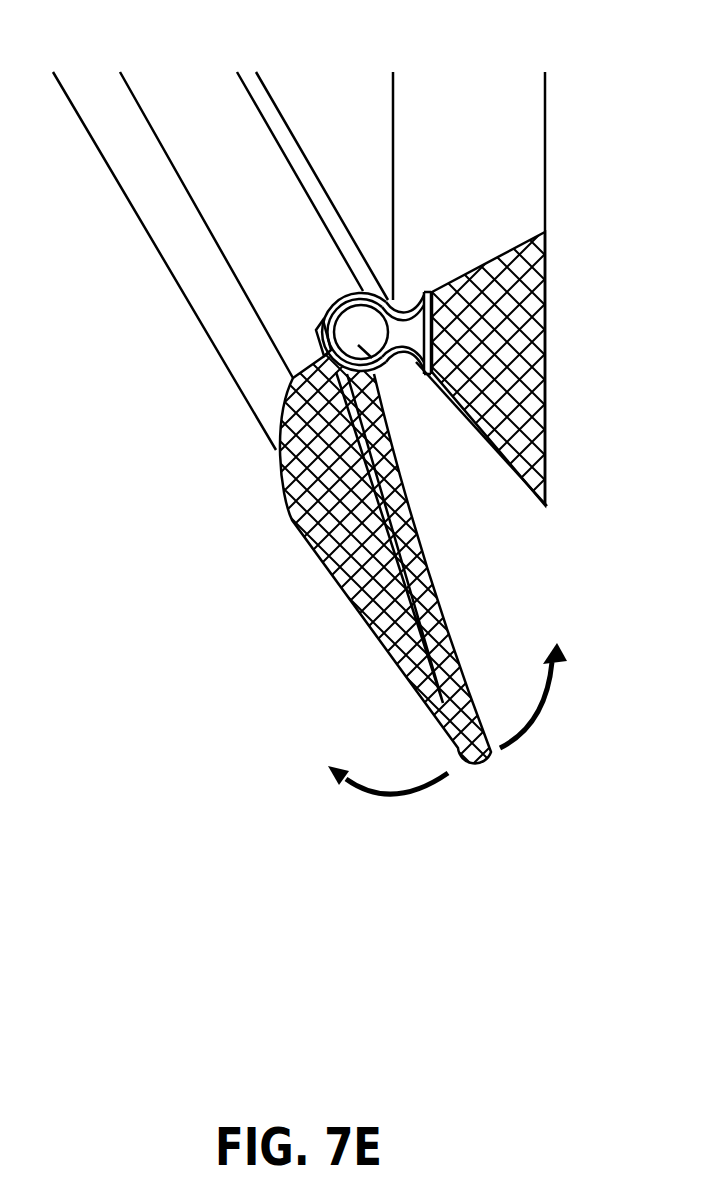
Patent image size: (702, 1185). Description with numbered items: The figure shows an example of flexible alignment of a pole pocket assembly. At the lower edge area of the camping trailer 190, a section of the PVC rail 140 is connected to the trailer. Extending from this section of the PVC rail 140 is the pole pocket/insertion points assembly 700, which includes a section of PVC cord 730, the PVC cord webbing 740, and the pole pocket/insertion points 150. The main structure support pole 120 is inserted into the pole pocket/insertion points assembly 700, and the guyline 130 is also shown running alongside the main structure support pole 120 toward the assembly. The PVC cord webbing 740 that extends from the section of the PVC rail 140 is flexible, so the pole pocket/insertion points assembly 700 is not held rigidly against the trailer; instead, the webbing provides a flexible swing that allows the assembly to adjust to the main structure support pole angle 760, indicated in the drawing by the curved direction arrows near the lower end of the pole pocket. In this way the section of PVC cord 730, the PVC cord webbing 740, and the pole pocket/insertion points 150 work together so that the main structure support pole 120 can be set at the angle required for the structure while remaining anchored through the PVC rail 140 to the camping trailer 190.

The main structure support pole 120 is at (128, 142).
The guyline 130 is at (282, 135).
The camping trailer 190 is at (457, 105).
The PVC rail 140 is at (335, 303).
The PVC cord 730 is at (392, 368).
The PVC cord webbing 740 is at (372, 427).
The pole pocket/insertion points 150 is at (312, 522).
The pole pocket/insertion points assembly 700 is at (363, 557).
The main structure support pole angle 760 is at (525, 738).